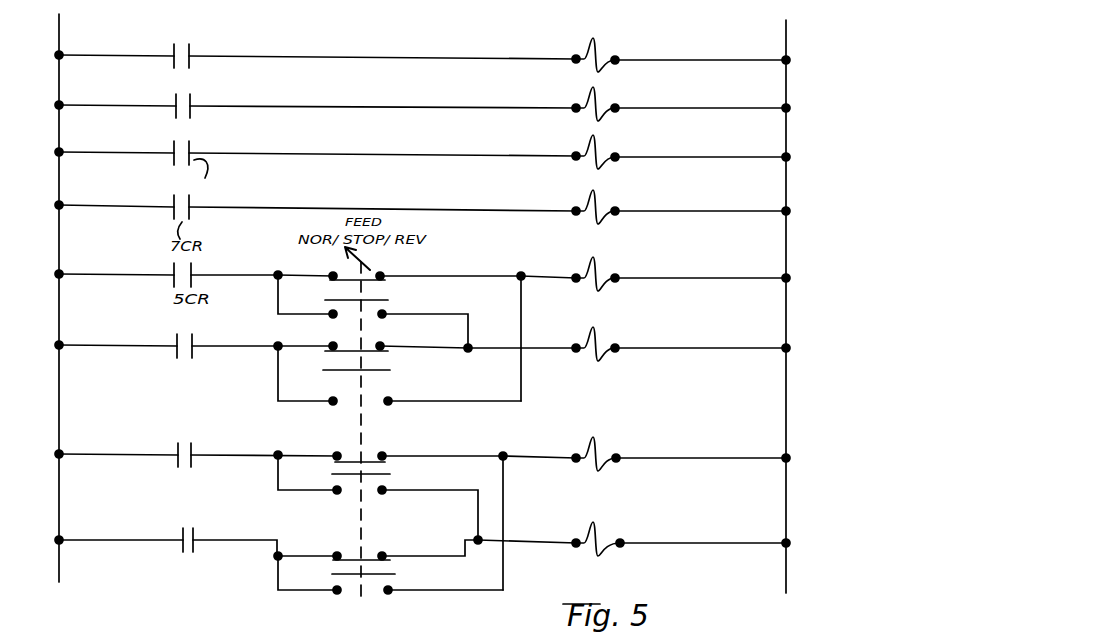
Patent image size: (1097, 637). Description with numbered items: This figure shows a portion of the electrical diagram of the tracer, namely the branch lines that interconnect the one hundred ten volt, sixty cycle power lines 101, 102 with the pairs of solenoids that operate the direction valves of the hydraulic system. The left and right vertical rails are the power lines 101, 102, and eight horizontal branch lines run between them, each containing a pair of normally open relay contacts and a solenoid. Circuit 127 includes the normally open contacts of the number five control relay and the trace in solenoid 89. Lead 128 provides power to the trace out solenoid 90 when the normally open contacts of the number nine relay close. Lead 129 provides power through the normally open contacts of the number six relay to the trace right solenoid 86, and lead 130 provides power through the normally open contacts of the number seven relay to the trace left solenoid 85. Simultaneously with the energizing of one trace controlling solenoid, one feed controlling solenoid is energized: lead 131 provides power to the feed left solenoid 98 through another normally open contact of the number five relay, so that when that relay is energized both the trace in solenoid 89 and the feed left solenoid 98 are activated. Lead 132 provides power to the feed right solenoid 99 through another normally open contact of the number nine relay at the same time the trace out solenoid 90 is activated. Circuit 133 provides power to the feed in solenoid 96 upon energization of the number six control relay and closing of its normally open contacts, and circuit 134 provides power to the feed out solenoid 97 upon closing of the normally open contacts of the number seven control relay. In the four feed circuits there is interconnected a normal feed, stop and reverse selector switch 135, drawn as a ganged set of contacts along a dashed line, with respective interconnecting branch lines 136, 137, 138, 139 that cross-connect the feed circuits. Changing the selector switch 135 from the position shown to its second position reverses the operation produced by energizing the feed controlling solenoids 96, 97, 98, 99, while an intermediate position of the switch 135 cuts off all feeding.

The power line 101 is at (59, 136).
The power line 102 is at (786, 126).
The circuit 127 is at (426, 58).
The lead 128 is at (431, 107).
The lead 129 is at (431, 153).
The lead 130 is at (435, 210).
The lead 131 is at (472, 275).
The lead 132 is at (128, 345).
The circuit 133 is at (127, 454).
The circuit 134 is at (133, 540).
The normal feed, stop and reverse selector switch 135 is at (365, 256).
The interconnecting branch line 136 is at (454, 314).
The interconnecting branch line 137 is at (456, 400).
The interconnecting branch line 138 is at (466, 490).
The interconnecting branch line 139 is at (461, 590).
The trace in solenoid 89 is at (605, 52).
The trace out solenoid 90 is at (608, 117).
The trace right solenoid 86 is at (607, 165).
The trace left solenoid 85 is at (600, 207).
The feed left solenoid 98 is at (607, 286).
The feed right solenoid 99 is at (612, 359).
The feed in solenoid 96 is at (606, 447).
The feed out solenoid 97 is at (605, 533).